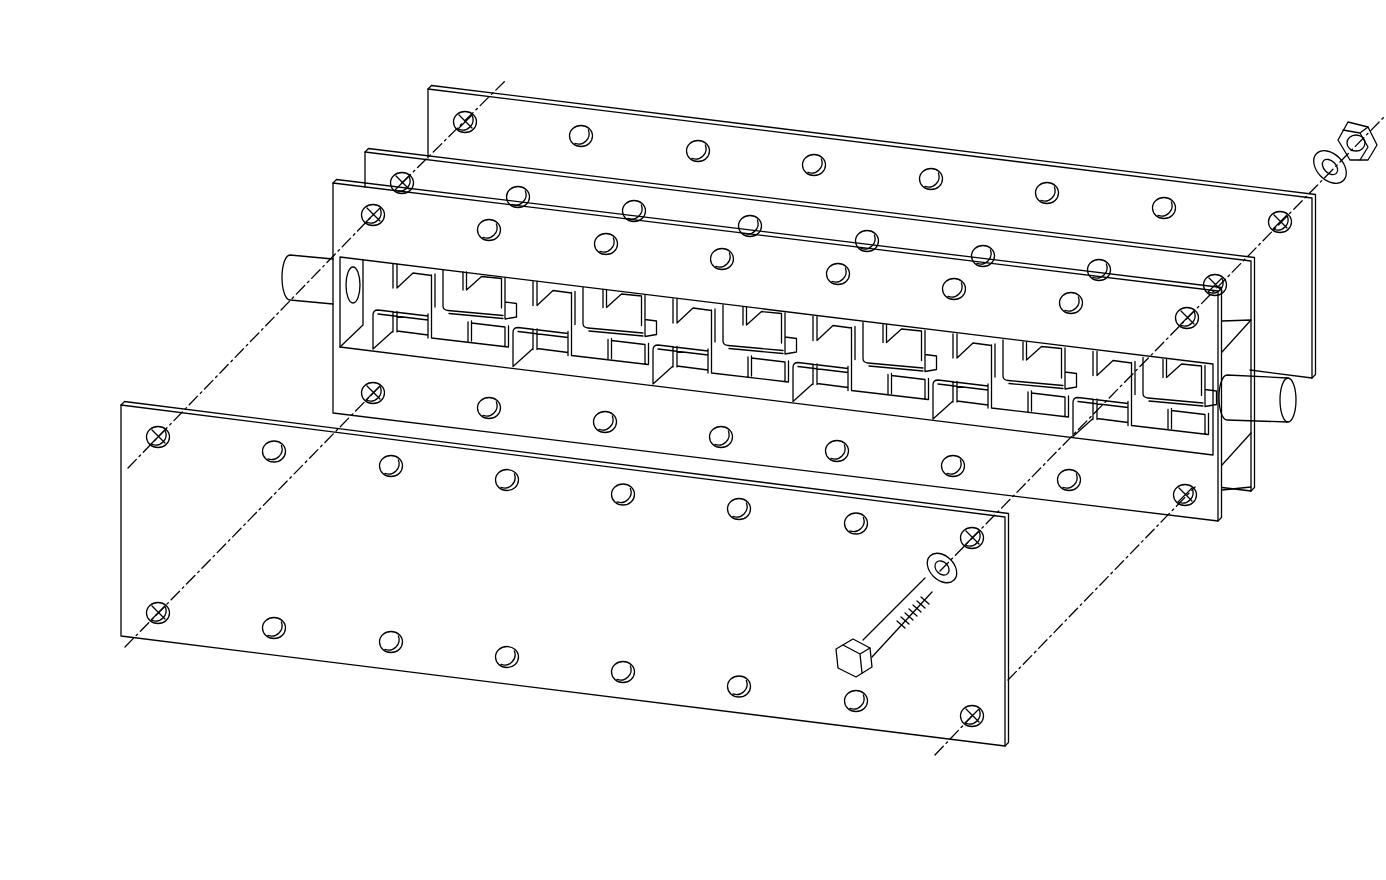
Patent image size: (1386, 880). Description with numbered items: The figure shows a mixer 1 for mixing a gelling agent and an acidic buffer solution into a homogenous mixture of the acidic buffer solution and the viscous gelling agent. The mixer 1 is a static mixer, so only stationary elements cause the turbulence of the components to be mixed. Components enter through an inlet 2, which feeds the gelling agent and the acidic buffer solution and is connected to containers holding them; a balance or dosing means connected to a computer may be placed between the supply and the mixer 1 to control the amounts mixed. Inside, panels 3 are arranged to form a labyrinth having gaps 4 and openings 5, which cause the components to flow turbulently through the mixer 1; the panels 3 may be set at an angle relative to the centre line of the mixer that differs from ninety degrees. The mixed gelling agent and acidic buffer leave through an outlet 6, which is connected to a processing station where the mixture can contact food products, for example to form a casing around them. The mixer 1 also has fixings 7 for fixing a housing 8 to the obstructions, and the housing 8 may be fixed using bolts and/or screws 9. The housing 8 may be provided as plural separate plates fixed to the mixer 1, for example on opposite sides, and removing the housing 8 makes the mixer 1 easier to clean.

The mixer 1 is at (298, 146).
The inlet 2 is at (1292, 402).
The panels 3 is at (777, 351).
The gaps 4 is at (803, 341).
The openings 5 is at (903, 340).
The outlet 6 is at (286, 267).
The fixings 7 is at (401, 181).
The housing 8 is at (993, 186).
The bolts and/or screws 9 is at (1351, 122).